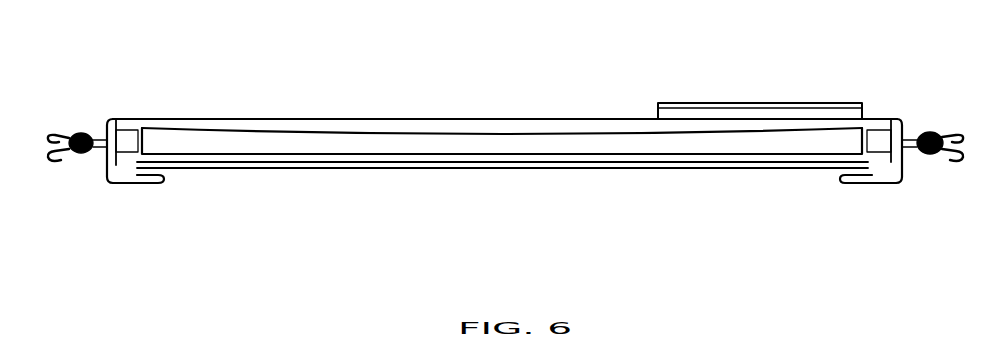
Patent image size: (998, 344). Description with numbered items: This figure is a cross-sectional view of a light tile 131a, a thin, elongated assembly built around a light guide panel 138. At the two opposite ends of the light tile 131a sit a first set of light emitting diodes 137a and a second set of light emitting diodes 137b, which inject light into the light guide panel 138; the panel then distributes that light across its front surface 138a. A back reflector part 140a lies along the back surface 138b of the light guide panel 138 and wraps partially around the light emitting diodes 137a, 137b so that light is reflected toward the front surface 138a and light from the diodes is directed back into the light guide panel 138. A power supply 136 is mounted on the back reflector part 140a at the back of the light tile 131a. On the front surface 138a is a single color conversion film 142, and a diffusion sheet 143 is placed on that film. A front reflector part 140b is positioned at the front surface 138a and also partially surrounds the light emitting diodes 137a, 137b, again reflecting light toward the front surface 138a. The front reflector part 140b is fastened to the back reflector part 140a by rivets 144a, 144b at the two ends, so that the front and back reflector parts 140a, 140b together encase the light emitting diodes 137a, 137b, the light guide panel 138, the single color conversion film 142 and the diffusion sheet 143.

The light tile 131a is at (253, 58).
The power supply 136 is at (776, 102).
The first set of light emitting diodes 137a is at (128, 138).
The second set of light emitting diodes 137b is at (877, 143).
The light guide panel 138 is at (498, 143).
The front surface of the light guide panel 138a is at (528, 157).
The back surface of the light guide panel 138b is at (292, 132).
The back reflector part 140a is at (424, 118).
The front reflector part 140b is at (122, 184).
The single color conversion film 142 is at (380, 162).
The diffusion sheet 143 is at (620, 168).
The rivet 144a is at (82, 131).
The rivet 144b is at (930, 132).